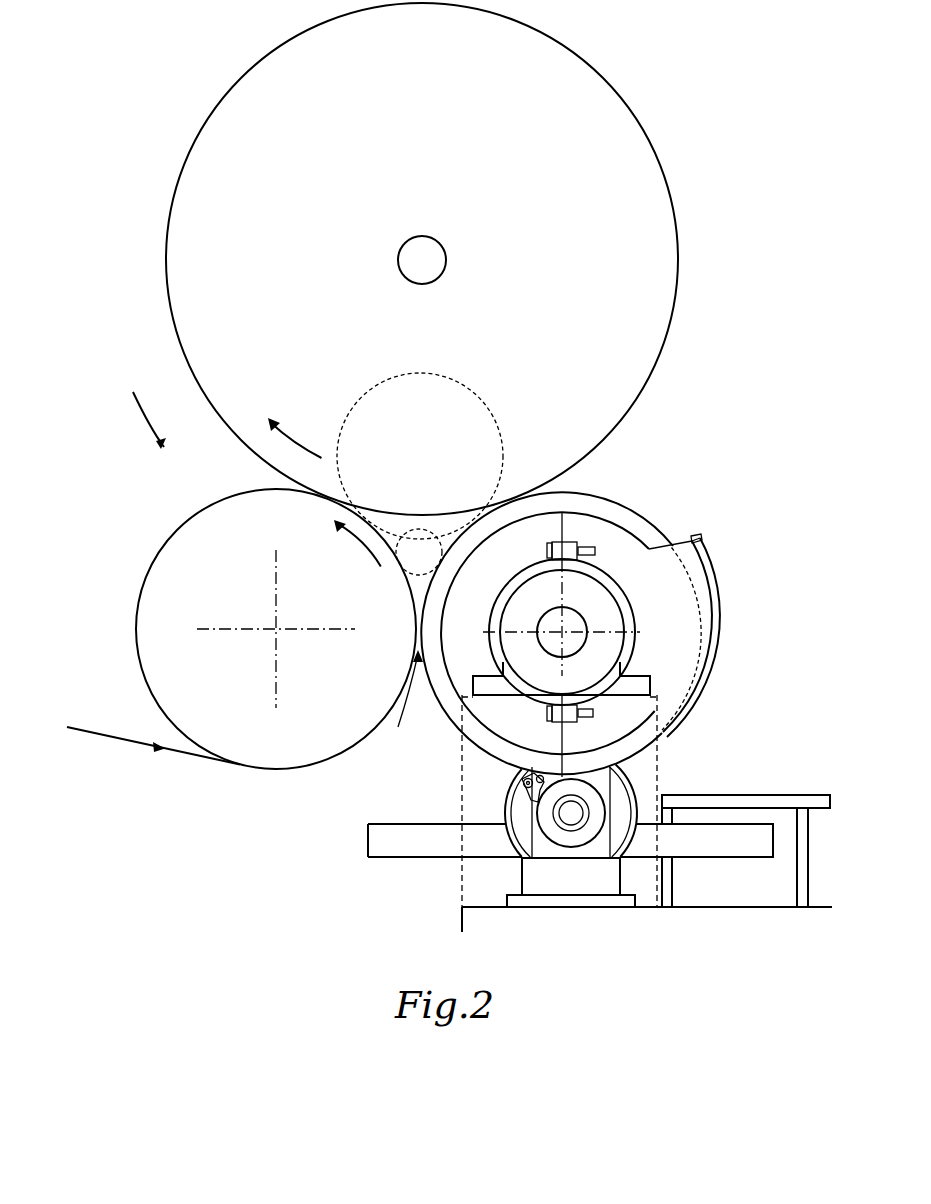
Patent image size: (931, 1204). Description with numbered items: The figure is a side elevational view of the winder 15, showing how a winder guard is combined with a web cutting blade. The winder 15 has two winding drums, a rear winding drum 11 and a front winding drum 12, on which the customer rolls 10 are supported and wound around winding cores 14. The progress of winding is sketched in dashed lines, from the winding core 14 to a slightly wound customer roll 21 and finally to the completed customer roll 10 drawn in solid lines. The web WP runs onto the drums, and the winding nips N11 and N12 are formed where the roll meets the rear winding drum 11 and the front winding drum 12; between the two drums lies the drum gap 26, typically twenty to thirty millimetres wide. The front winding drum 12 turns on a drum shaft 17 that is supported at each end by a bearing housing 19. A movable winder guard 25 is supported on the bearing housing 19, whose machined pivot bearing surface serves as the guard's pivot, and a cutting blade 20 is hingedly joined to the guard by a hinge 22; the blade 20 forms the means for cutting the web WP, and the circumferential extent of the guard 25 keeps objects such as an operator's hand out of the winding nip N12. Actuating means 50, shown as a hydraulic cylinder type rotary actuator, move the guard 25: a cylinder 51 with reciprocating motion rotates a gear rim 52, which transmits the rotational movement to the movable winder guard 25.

The customer roll 10 is at (679, 240).
The winding core 14 is at (440, 246).
The slightly wound customer roll 21 is at (466, 384).
The winder 15 is at (144, 409).
The rear winding drum 11 is at (190, 521).
The web WP is at (128, 742).
The winding nip N11 is at (325, 498).
The winding nip N12 is at (518, 497).
The gap 26 is at (407, 701).
The front winding drum 12 is at (614, 502).
The movable winder guard 25 is at (683, 643).
The drum shaft 17 is at (580, 607).
The bearing housing 19 is at (622, 617).
The hinge 22 is at (538, 773).
The cutting blade 20 is at (540, 796).
The actuating means 50 is at (578, 825).
The gear rim 52 is at (508, 838).
The cylinder 51 is at (690, 847).